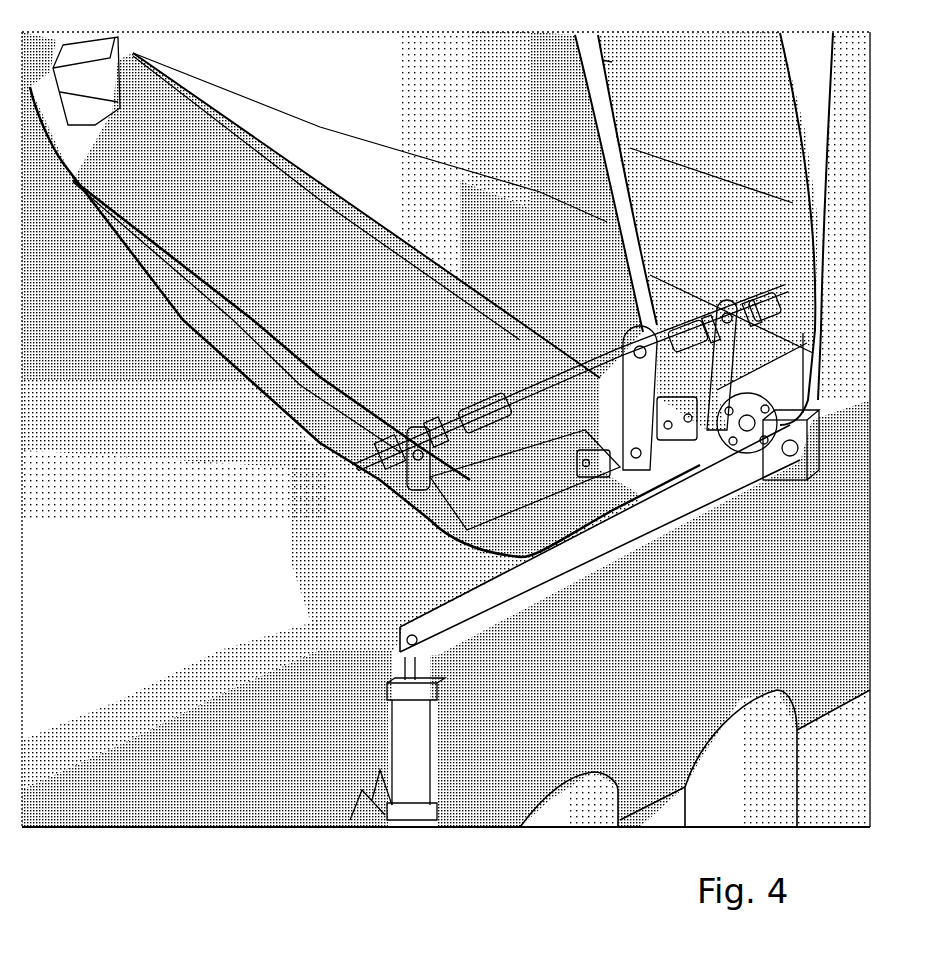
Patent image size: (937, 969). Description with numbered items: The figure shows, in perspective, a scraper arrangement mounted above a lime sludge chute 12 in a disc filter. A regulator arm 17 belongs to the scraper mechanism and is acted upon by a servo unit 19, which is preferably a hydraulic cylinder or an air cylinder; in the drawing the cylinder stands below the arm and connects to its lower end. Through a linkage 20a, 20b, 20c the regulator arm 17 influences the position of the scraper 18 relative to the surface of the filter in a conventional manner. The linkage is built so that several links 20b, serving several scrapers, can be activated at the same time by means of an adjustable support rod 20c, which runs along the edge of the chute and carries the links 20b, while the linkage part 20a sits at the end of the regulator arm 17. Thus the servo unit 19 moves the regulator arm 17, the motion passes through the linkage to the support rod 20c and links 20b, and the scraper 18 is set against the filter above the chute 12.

The lime sludge chute 12 is at (292, 302).
The regulator arm 17 is at (620, 536).
The scraper 18 is at (520, 316).
The servo unit 19 is at (418, 723).
The linkage 20a is at (778, 410).
The links 20b is at (730, 372).
The adjustable support rod 20c is at (764, 292).